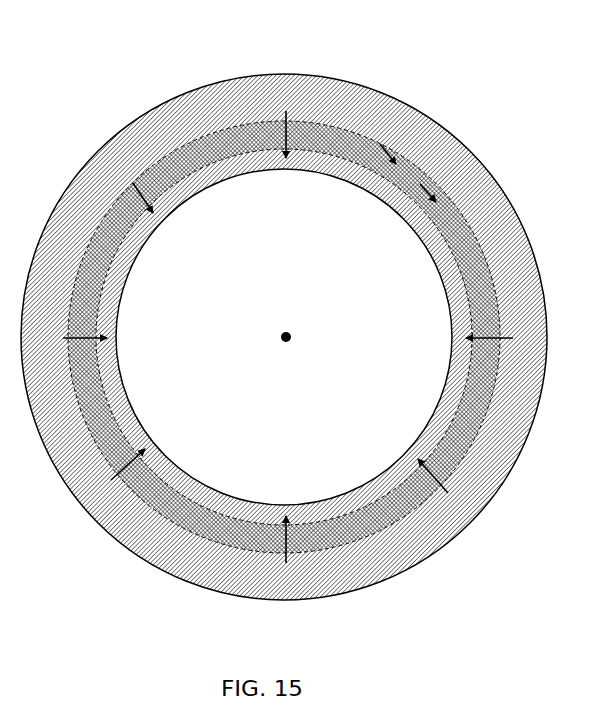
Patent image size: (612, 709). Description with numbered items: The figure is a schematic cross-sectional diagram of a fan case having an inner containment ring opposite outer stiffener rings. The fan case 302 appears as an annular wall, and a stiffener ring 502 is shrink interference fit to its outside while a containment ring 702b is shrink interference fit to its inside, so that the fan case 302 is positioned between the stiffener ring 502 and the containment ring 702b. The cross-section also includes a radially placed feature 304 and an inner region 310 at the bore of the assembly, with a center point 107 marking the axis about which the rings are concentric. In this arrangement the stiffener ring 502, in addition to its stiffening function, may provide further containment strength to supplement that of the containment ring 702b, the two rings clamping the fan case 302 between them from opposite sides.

The stiffener ring 502 is at (307, 72).
The outer layer boundary 304 is at (323, 115).
The fan case 302 is at (370, 148).
The inner layer 310 is at (408, 200).
The containment ring 702b is at (437, 225).
The central axis 107 is at (278, 325).